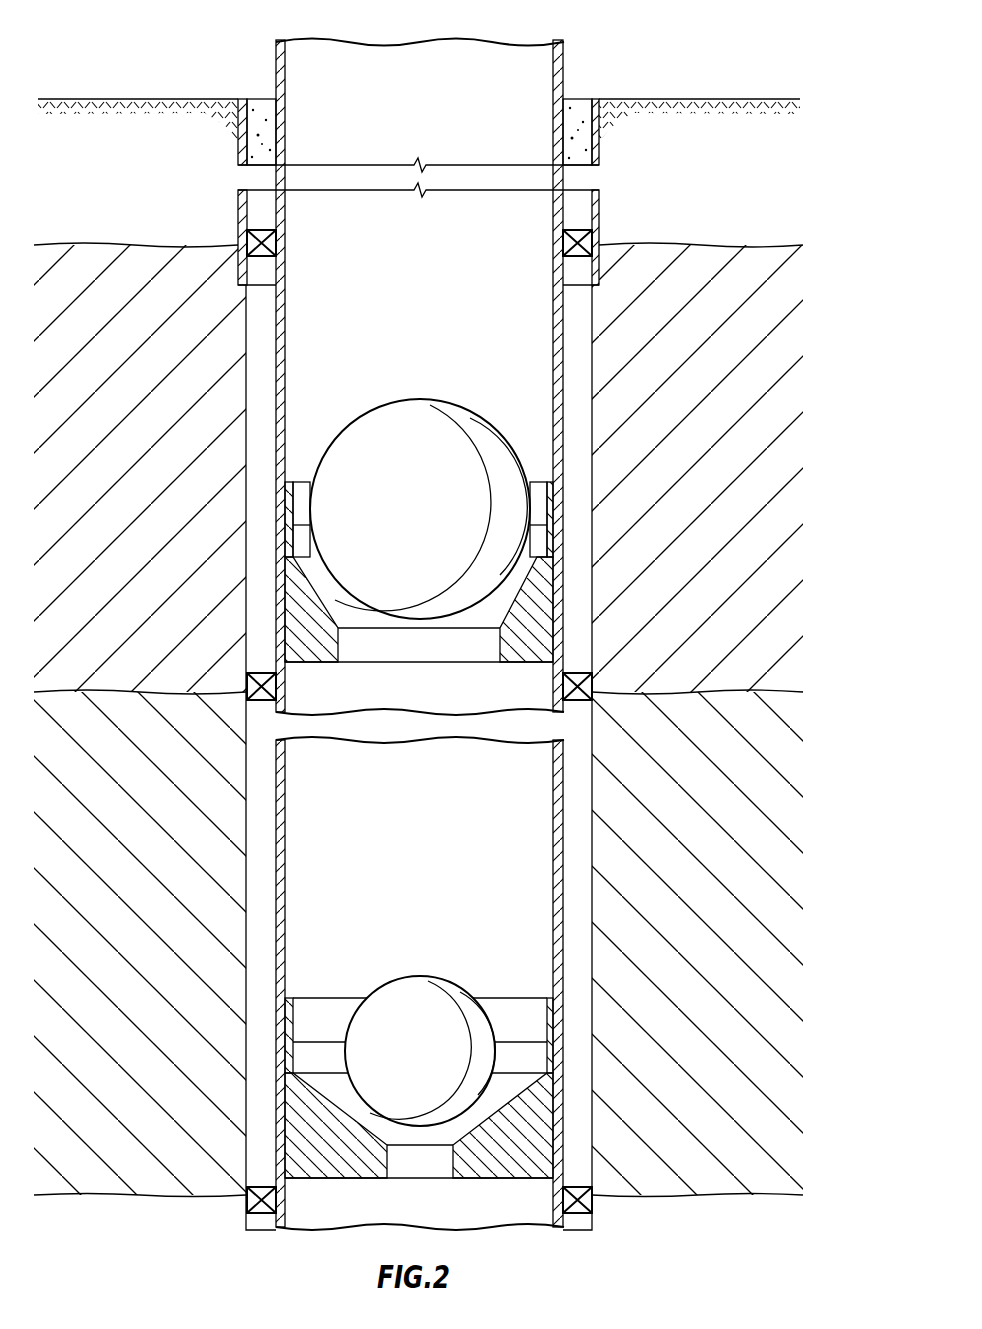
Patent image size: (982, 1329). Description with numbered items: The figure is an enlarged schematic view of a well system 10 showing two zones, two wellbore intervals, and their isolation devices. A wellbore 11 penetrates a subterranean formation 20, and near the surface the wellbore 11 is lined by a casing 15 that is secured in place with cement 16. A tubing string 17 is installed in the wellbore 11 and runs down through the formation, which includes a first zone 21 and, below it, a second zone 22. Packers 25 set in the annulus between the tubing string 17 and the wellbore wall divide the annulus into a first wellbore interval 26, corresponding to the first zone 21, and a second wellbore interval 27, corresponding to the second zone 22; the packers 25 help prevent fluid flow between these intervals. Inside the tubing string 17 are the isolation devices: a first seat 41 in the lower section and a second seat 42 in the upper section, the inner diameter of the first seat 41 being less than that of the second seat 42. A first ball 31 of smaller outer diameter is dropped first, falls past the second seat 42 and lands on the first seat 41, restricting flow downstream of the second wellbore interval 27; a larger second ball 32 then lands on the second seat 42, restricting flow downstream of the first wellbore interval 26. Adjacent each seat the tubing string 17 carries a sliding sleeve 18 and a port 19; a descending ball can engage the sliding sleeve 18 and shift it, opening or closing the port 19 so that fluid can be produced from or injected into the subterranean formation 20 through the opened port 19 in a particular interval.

The well system 10 is at (103, 57).
The wellbore 11 is at (596, 385).
The casing 15 is at (600, 203).
The cement 16 is at (568, 132).
The tubing string 17 is at (272, 335).
The sliding sleeve 18 is at (553, 508).
The port 19 is at (275, 502).
The subterranean formation 20 is at (810, 211).
The first zone 21 is at (115, 455).
The second zone 22 is at (93, 915).
The packer 25 is at (247, 232).
The first wellbore interval 26 is at (770, 355).
The second wellbore interval 27 is at (770, 792).
The first ball 31 is at (365, 1052).
The second ball 32 is at (338, 540).
The first seat 41 is at (502, 1110).
The second seat 42 is at (537, 588).